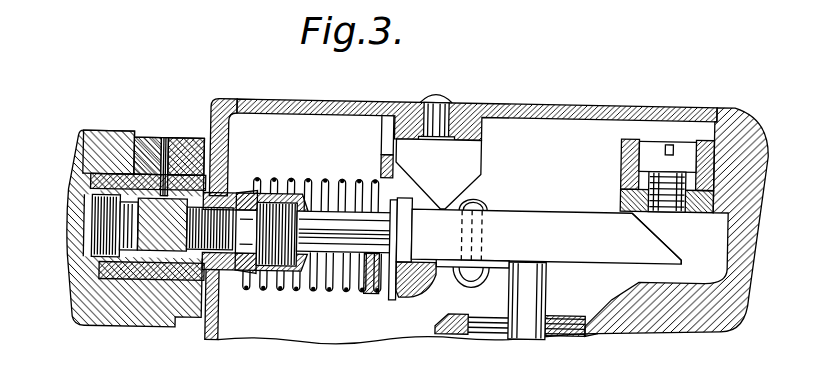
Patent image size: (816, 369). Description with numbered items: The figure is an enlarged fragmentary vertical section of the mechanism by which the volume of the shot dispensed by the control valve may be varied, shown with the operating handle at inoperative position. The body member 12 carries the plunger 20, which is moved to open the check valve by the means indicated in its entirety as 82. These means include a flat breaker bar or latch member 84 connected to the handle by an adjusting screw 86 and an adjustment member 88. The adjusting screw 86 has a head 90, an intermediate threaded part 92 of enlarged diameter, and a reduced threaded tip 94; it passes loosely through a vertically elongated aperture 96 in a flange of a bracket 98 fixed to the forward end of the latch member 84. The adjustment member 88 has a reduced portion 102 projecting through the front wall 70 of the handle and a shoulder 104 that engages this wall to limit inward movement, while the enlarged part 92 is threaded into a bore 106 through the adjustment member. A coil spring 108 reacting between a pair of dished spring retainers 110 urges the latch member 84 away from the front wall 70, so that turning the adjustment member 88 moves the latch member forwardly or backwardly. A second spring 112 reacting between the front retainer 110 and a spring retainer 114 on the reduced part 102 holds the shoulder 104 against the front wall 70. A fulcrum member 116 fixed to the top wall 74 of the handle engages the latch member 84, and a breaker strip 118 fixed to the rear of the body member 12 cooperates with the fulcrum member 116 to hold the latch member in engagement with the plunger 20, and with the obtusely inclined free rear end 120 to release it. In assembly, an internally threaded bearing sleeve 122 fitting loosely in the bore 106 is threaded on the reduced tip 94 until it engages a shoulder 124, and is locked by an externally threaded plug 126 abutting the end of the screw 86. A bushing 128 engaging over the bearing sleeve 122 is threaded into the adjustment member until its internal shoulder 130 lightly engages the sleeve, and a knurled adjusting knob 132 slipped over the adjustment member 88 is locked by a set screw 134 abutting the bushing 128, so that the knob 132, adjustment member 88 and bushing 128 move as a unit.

The body member 12 is at (718, 314).
The plunger 20 is at (543, 288).
The front wall 70 is at (207, 160).
The top wall 74 is at (523, 103).
The plunger operating means 82 is at (515, 206).
The latch member 84 is at (553, 215).
The adjusting screw 86 is at (331, 224).
The adjustment member 88 is at (181, 137).
The head 90 is at (399, 204).
The intermediate threaded part 92 is at (297, 190).
The reduced threaded tip 94 is at (254, 180).
The aperture 96 is at (383, 140).
The bracket 98 is at (394, 168).
The reduced portion 102 is at (259, 198).
The shoulder 104 is at (229, 188).
The bore 106 is at (240, 278).
The coil spring 108 is at (343, 292).
The spring retainers 110 is at (377, 294).
The second spring 112 is at (250, 292).
The spring retainer 114 is at (265, 284).
The fulcrum member 116 is at (462, 154).
The breaker strip 118 is at (712, 199).
The free rear end 120 is at (661, 228).
The bearing sleeve 122 is at (166, 152).
The shoulder 124 is at (197, 291).
The plug 126 is at (167, 248).
The bushing 128 is at (115, 272).
The internal shoulder 130 is at (123, 247).
The adjusting knob 132 is at (66, 194).
The set screw 134 is at (101, 140).